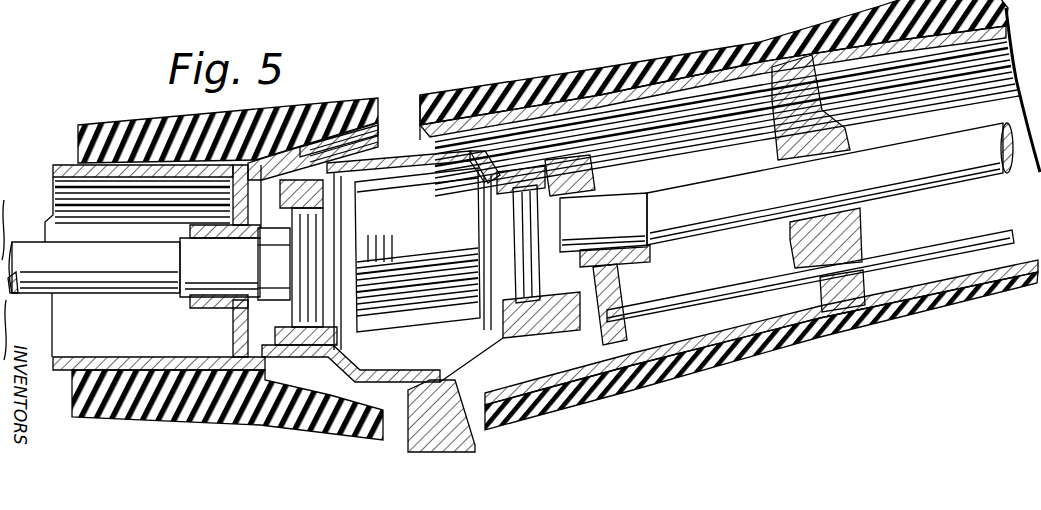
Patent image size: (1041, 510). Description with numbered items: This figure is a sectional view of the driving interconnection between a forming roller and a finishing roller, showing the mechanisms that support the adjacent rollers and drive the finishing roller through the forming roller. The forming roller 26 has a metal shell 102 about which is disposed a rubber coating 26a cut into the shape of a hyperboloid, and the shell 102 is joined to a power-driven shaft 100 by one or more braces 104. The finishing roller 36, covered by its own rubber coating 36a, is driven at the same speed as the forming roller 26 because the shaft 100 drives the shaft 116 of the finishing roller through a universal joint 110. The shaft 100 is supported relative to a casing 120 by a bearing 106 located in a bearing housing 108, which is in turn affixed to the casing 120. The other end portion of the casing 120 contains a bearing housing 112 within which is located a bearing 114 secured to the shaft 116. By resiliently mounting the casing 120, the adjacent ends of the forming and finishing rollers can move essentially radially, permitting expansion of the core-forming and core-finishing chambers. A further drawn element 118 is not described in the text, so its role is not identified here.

The forming roller 26 is at (322, 78).
The rubber coating 26a is at (190, 120).
The finishing roller 36 is at (649, 62).
The rubber coating 36a is at (545, 80).
The power-driven shaft 100 is at (88, 277).
The metal shell 102 is at (58, 167).
The braces 104 is at (202, 228).
The bearing 106 is at (312, 227).
The bearing housing 108 is at (373, 180).
The universal joint 110 is at (430, 197).
The bearing housing 112 is at (513, 180).
The bearing 114 is at (510, 307).
The shaft 116 is at (706, 195).
The rod 118 is at (592, 180).
The casing 120 is at (462, 450).